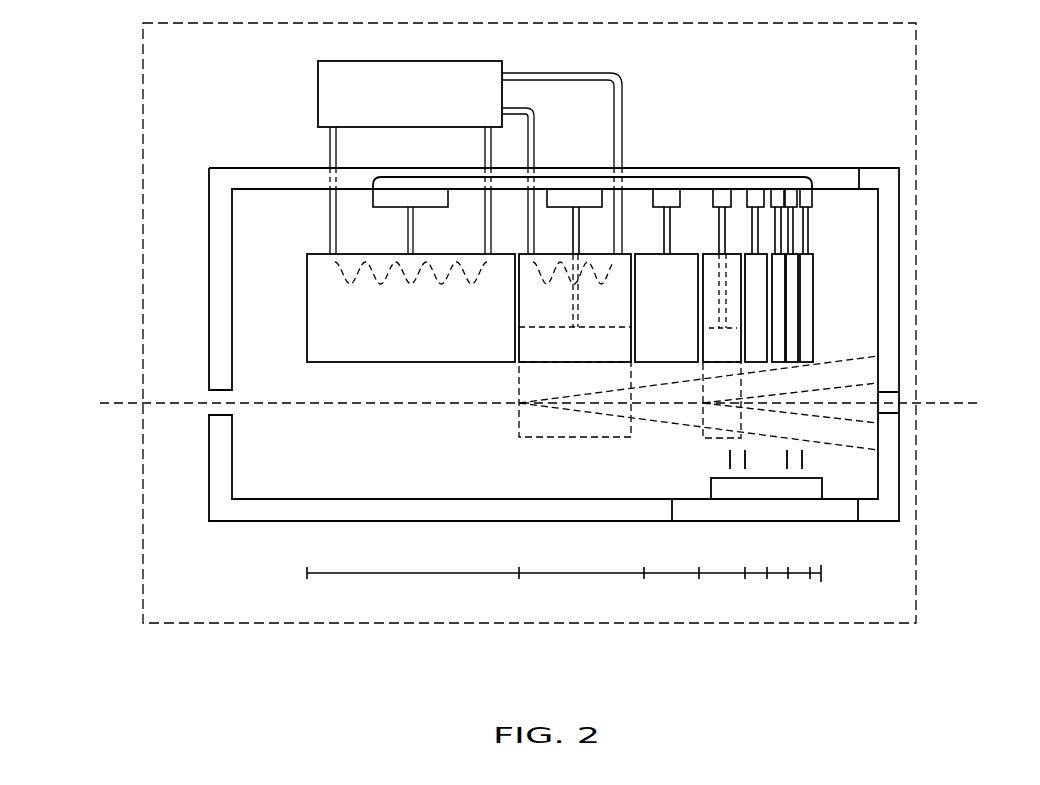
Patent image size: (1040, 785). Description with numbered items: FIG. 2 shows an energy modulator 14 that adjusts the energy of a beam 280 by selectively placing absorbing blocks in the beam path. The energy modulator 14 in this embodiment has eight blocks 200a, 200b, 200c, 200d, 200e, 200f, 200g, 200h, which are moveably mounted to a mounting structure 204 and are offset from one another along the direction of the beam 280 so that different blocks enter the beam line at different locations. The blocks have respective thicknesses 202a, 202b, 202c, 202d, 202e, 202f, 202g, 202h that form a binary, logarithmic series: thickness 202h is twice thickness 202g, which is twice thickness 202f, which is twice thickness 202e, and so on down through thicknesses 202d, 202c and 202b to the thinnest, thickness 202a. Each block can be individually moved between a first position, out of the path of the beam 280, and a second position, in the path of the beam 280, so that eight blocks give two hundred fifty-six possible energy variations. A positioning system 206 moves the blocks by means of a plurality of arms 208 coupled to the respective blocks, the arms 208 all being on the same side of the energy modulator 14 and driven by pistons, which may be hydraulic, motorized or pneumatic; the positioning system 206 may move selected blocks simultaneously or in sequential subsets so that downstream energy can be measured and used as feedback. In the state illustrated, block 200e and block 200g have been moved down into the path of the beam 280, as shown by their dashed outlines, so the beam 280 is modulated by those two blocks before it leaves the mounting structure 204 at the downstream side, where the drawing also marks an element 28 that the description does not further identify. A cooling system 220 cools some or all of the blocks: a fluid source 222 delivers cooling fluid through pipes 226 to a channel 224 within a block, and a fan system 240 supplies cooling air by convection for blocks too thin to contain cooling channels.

The energy modulator 14 is at (916, 597).
The window 28 is at (899, 405).
The block 200a is at (807, 353).
The block 200b is at (792, 337).
The block 200c is at (780, 310).
The block 200d is at (760, 288).
The block 200e is at (735, 273).
The block 200f is at (692, 319).
The block 200g is at (547, 438).
The block 200h is at (440, 326).
The thickness 202a is at (815, 575).
The thickness 202b is at (797, 575).
The thickness 202c is at (780, 575).
The thickness 202d is at (757, 575).
The thickness 202e is at (715, 575).
The thickness 202f is at (671, 586).
The thickness 202g is at (581, 586).
The thickness 202h is at (413, 586).
The mounting structure 204 is at (275, 167).
The positioning system 206 is at (672, 177).
The arm 208 is at (413, 219).
The cooling system 220 is at (516, 54).
The fluid source 222 is at (430, 104).
The channel 224 is at (335, 262).
The pipe 226 is at (338, 163).
The fan system 240 is at (777, 492).
The beam 280 is at (192, 403).